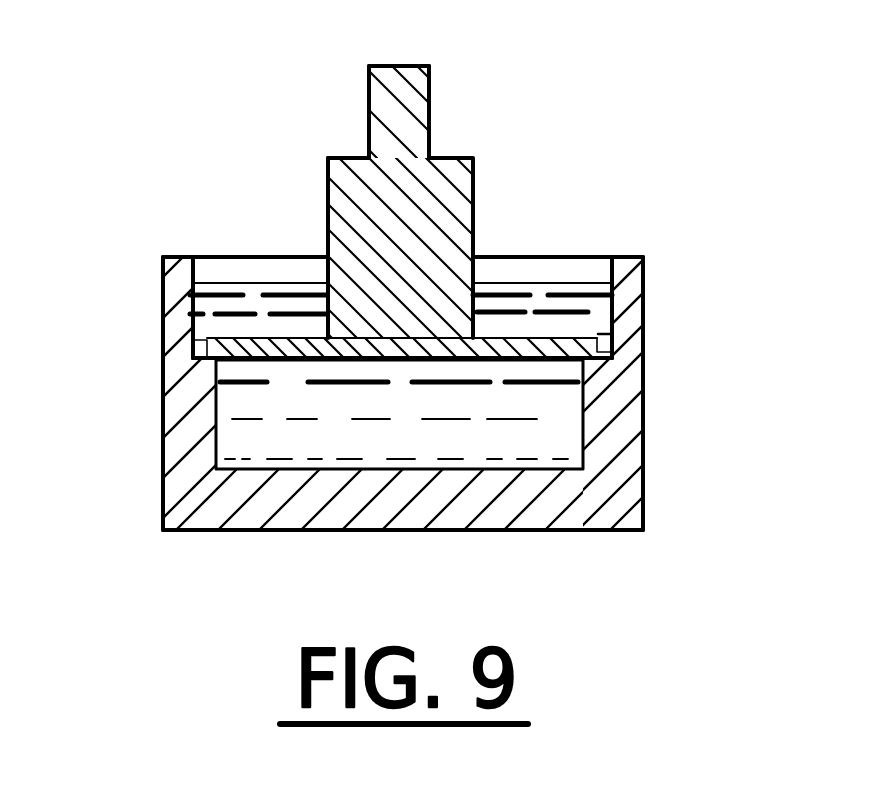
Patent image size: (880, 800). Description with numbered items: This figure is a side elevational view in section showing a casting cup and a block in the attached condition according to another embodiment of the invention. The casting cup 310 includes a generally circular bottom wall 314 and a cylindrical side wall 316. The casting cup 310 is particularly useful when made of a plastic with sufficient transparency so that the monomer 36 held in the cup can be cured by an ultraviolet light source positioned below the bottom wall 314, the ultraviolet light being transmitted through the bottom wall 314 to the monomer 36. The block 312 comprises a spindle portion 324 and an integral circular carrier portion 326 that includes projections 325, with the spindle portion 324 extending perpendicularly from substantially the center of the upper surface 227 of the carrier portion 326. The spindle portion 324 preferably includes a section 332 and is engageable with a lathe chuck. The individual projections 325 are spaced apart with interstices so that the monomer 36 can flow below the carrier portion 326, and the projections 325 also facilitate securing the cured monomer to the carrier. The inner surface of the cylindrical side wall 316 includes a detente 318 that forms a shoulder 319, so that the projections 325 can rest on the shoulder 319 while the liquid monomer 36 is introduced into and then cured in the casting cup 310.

The casting cup 310 is at (643, 510).
The bottom wall 314 is at (320, 530).
The cylindrical side wall 316 is at (163, 297).
The detente 318 is at (611, 273).
The shoulder 319 is at (612, 350).
The spindle portion 324 is at (327, 184).
The section 332 is at (432, 92).
The block 312 is at (350, 290).
The monomer 36 is at (506, 256).
The upper surface 227 is at (583, 335).
The carrier portion 326 is at (283, 350).
The projections 325 is at (193, 348).